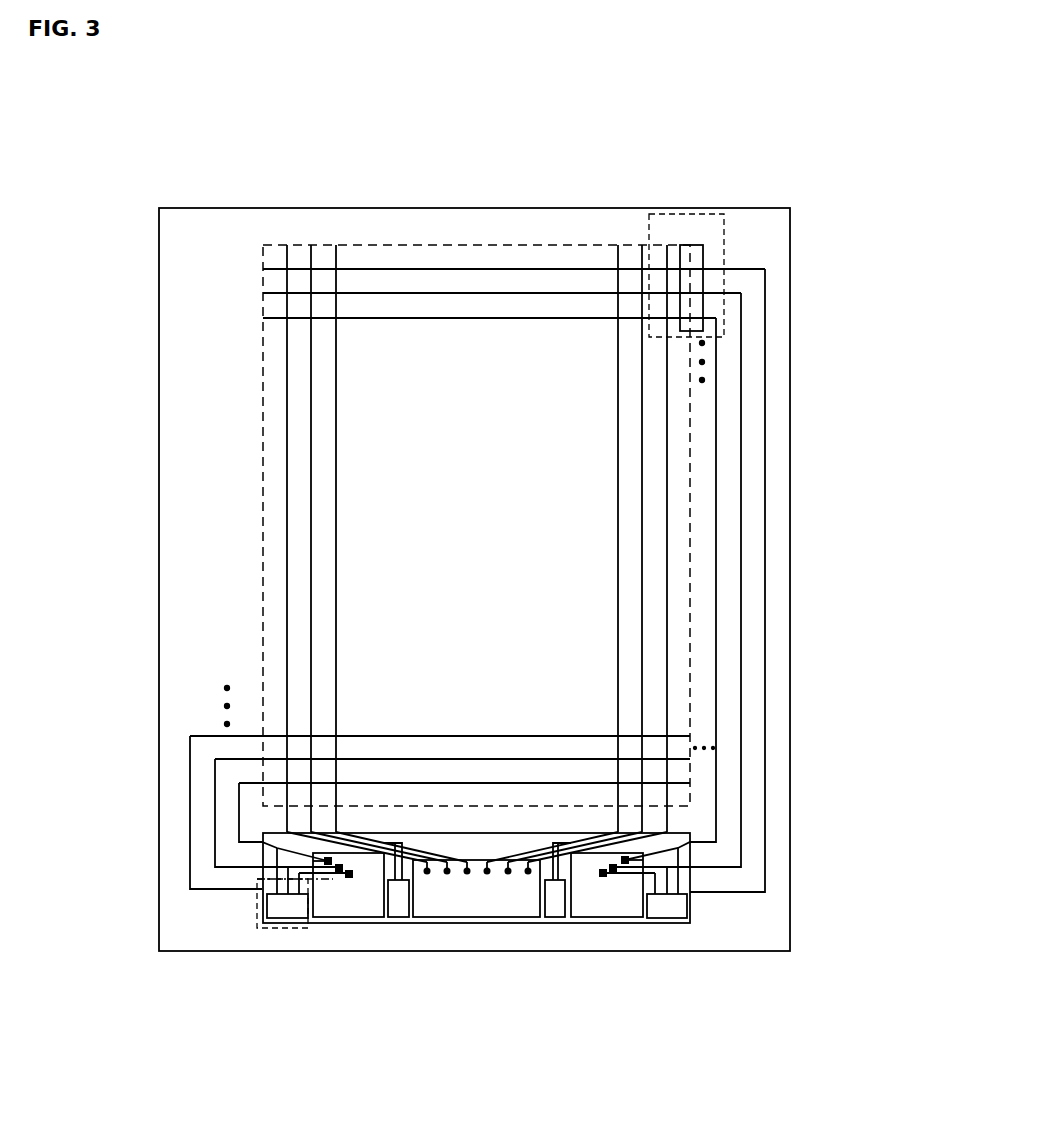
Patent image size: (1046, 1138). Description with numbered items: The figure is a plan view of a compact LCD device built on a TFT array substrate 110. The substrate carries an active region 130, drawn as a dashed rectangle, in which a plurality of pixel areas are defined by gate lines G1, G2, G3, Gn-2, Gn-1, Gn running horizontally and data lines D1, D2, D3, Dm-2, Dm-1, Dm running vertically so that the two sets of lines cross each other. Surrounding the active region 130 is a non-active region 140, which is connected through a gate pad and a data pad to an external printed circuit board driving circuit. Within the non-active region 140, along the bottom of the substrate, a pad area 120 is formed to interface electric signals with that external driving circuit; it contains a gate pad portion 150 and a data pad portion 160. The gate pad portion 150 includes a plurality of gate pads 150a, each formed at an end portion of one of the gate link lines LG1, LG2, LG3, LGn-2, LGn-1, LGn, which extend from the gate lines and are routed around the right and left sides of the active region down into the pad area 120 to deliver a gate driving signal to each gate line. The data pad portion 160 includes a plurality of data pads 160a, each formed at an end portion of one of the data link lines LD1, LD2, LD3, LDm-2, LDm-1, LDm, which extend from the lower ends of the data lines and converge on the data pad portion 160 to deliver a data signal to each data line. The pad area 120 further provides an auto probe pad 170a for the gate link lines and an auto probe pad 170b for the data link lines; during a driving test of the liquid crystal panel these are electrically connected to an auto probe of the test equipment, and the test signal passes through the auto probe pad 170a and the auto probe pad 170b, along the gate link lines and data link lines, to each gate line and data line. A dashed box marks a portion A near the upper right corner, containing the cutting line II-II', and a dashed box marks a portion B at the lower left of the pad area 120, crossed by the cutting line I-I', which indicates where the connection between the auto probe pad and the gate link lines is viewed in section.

The TFT array substrate 110 is at (494, 144).
The pad area 120 is at (324, 924).
The active region 130 is at (442, 260).
The non-active region 140 is at (397, 220).
The gate pad portion 150 is at (366, 900).
The gate pad 150a is at (396, 842).
The data pad portion 160 is at (458, 905).
The data pad 160a is at (486, 858).
The auto probe pad for the gate link lines 170a is at (250, 906).
The auto probe pad for the data link lines 170b is at (399, 906).
The data line D1 is at (287, 252).
The data line D2 is at (311, 252).
The data line D3 is at (336, 252).
The data line Dm-2 is at (618, 252).
The data line Dm-1 is at (642, 252).
The data line Dm is at (667, 256).
The gate line G1 is at (490, 270).
The gate line G2 is at (514, 294).
The gate line G3 is at (556, 318).
The gate line Gn-2 is at (676, 736).
The gate line Gn-1 is at (682, 759).
The gate line Gn is at (683, 783).
The gate link line LG1 is at (766, 293).
The gate link line LG2 is at (742, 318).
The gate link line LG3 is at (717, 357).
The gate link line LGn-2 is at (204, 736).
The gate link line LGn-1 is at (215, 780).
The gate link line LGn is at (239, 835).
The data link line LD1 is at (290, 838).
The data link line LD2 is at (330, 824).
The data link line LD3 is at (292, 832).
The data link line LDm-2 is at (590, 900).
The data link line LDm-1 is at (630, 900).
The data link line LDm is at (670, 824).
The portion A is at (724, 246).
The portion B is at (273, 929).
The section line I is at (289, 881).
The section line I' is at (329, 888).
The section line II is at (677, 231).
The section line II' is at (703, 231).